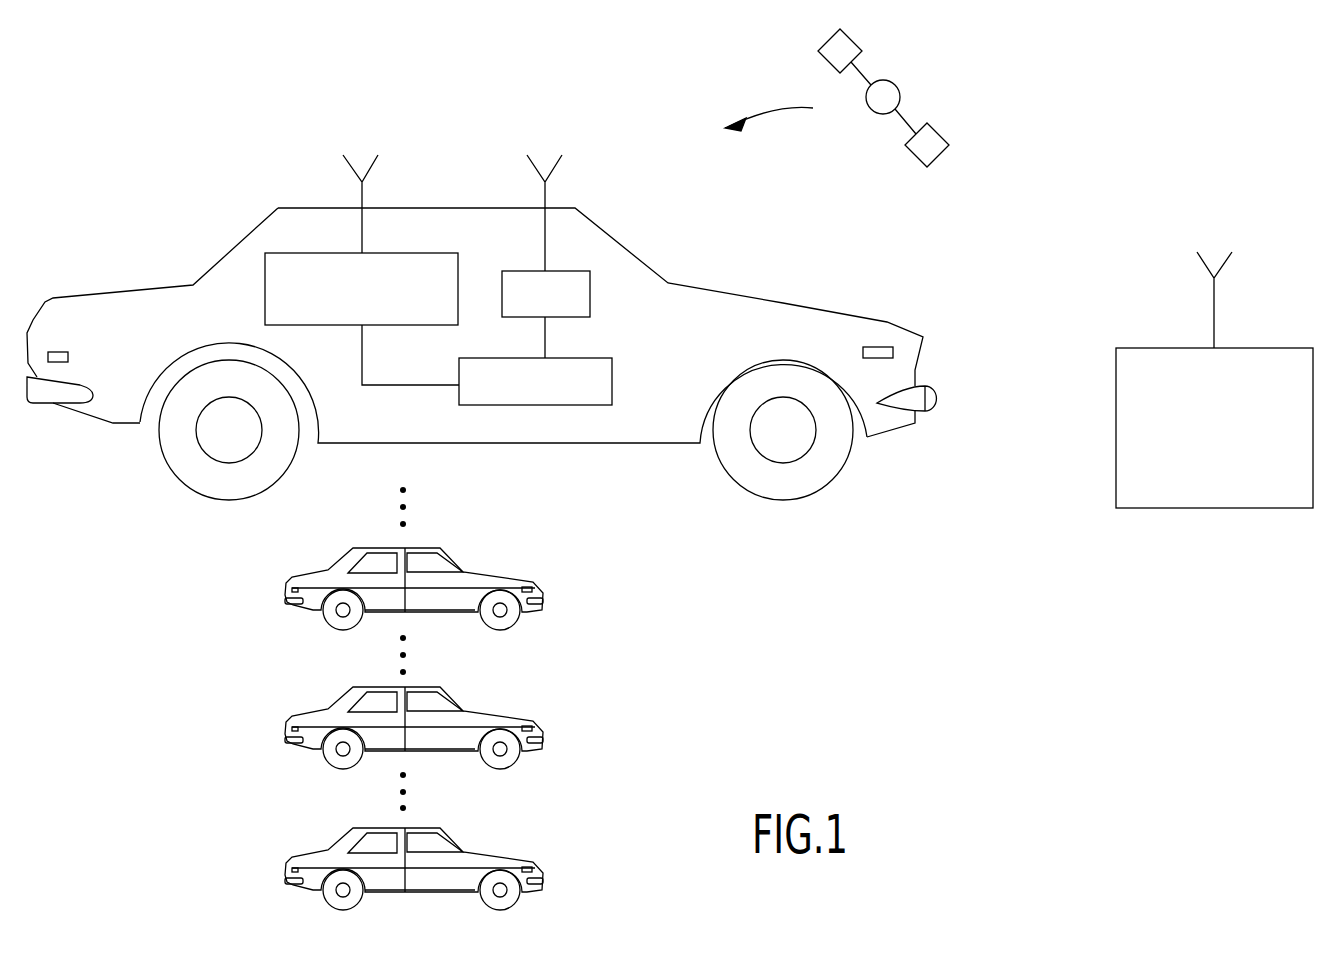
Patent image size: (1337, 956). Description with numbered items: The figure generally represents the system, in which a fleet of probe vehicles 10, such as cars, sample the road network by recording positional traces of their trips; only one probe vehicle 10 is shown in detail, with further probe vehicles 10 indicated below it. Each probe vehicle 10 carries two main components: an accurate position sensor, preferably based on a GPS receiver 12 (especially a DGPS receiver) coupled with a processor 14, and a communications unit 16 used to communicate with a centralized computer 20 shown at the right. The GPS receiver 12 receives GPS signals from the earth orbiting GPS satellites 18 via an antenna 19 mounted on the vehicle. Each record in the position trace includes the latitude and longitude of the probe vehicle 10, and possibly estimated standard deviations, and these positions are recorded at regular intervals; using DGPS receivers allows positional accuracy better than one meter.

The probe vehicle 10 is at (127, 293).
The GPS receiver 12 is at (590, 301).
The processor 14 is at (612, 381).
The communications unit 16 is at (263, 303).
The GPS satellite 18 is at (899, 90).
The antenna 19 is at (553, 170).
The centralized computer 20 is at (1210, 508).